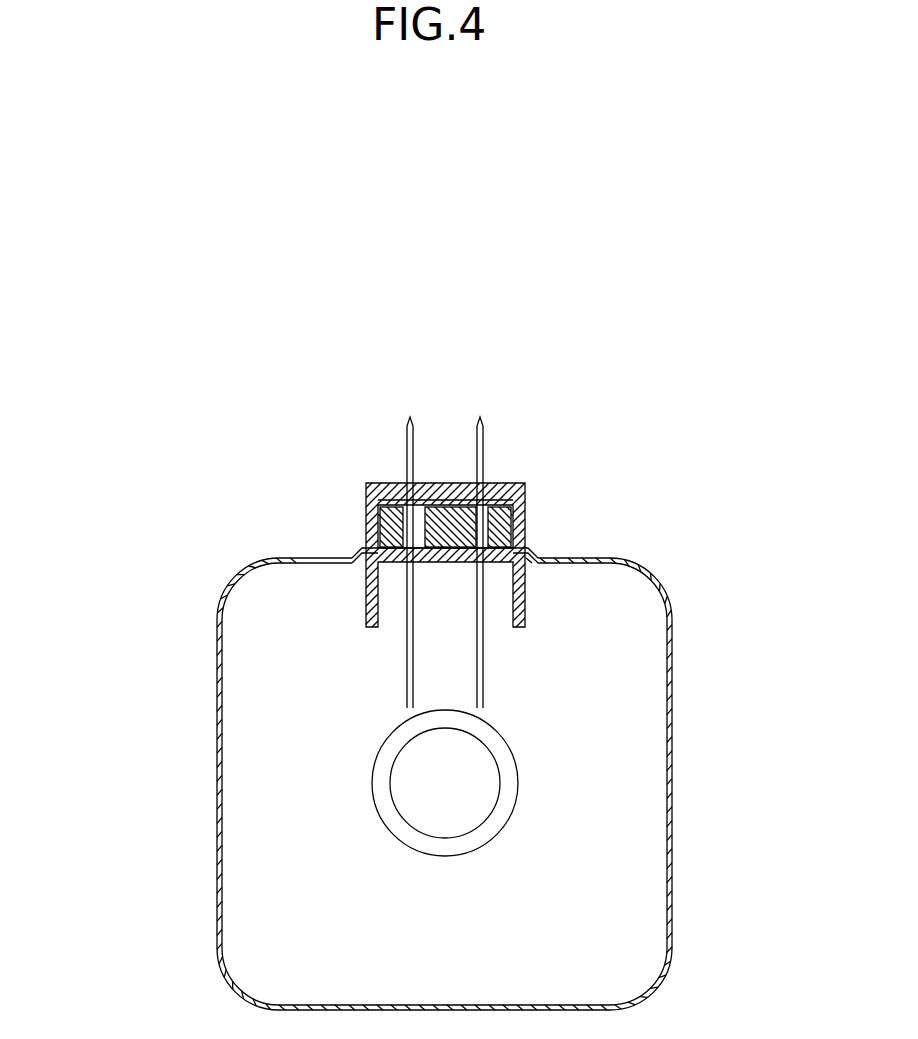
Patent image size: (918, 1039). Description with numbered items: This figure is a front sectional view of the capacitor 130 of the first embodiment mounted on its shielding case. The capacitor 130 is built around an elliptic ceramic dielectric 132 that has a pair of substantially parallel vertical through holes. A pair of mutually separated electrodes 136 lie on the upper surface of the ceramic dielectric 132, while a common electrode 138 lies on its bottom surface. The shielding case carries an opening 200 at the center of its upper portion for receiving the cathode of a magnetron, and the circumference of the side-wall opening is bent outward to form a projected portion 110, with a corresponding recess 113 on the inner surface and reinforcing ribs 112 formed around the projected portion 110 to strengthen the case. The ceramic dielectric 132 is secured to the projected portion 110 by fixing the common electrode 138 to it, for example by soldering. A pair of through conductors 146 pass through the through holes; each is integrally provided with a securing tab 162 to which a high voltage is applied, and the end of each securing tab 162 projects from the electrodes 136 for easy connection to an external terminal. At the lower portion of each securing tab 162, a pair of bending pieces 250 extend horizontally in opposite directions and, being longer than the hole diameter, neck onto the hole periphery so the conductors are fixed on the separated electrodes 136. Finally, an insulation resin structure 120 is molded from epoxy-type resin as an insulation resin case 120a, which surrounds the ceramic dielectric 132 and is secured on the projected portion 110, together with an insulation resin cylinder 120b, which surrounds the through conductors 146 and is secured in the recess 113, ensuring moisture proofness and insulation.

The projected portion 110 is at (540, 552).
The reinforcing ribs 112 is at (332, 558).
The recess 113 is at (522, 572).
The insulation resin structure 120 is at (106, 505).
The insulation resin case 120a is at (376, 522).
The insulation resin cylinder 120b is at (372, 606).
The capacitor 130 is at (578, 428).
The ceramic dielectric 132 is at (378, 516).
The separated electrodes 136 is at (386, 505).
The common electrode 138 is at (447, 556).
The through conductors 146 is at (490, 694).
The securing tab 162 is at (484, 436).
The opening 200 is at (474, 822).
The bending pieces 250 is at (500, 483).